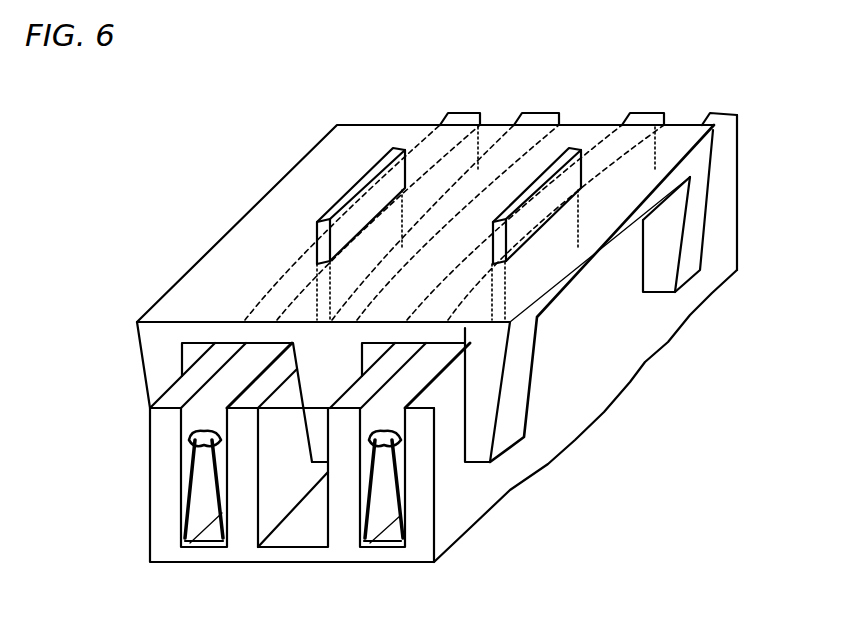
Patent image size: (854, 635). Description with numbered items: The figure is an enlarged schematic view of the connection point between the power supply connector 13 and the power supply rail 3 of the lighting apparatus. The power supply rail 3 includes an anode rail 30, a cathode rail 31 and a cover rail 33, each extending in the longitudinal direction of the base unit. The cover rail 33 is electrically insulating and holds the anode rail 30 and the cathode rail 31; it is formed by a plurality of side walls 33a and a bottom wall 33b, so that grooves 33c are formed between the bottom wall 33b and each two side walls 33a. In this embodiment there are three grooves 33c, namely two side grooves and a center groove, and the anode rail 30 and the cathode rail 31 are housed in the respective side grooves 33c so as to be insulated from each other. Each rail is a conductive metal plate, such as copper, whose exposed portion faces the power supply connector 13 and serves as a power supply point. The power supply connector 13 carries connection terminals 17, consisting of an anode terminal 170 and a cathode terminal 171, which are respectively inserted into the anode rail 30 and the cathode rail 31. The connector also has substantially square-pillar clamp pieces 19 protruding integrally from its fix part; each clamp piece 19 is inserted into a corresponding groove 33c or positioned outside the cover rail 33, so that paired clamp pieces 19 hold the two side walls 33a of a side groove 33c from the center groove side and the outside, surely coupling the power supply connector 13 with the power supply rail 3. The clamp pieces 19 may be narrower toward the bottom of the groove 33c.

The power supply connector 13 is at (258, 232).
The connection terminals 17 is at (449, 140).
The anode terminal 170 is at (393, 147).
The cathode terminal 171 is at (537, 163).
The clamp pieces 19 is at (687, 253).
The power supply rail 3 is at (258, 485).
The anode rail 30 is at (183, 512).
The cathode rail 31 is at (372, 470).
The cover rail 33 is at (165, 488).
The side walls 33a is at (345, 532).
The bottom wall 33b is at (297, 555).
The grooves 33c is at (290, 533).